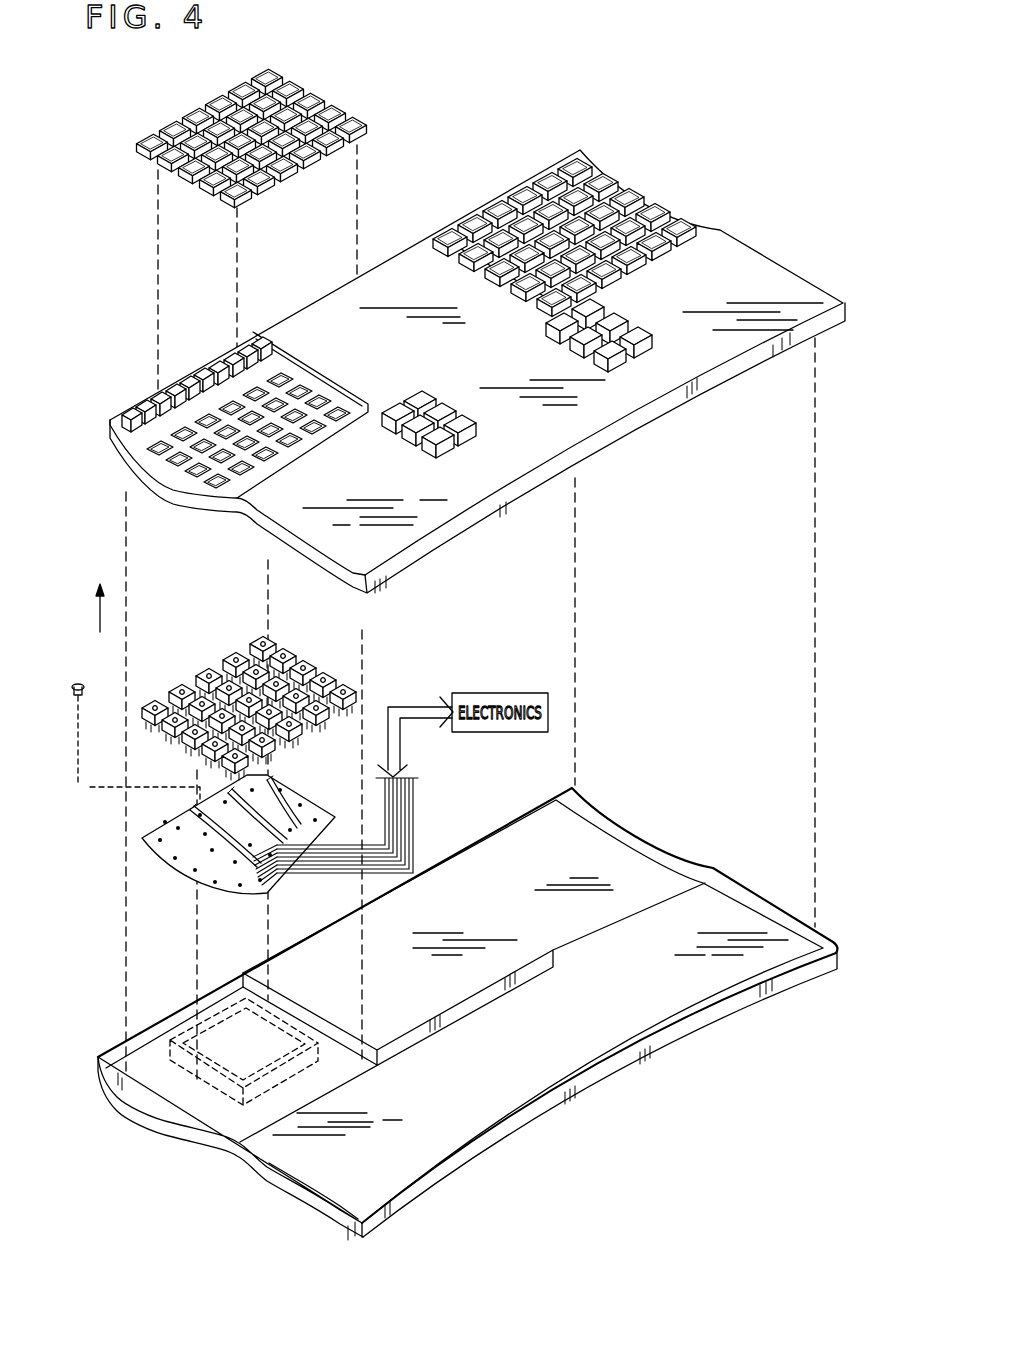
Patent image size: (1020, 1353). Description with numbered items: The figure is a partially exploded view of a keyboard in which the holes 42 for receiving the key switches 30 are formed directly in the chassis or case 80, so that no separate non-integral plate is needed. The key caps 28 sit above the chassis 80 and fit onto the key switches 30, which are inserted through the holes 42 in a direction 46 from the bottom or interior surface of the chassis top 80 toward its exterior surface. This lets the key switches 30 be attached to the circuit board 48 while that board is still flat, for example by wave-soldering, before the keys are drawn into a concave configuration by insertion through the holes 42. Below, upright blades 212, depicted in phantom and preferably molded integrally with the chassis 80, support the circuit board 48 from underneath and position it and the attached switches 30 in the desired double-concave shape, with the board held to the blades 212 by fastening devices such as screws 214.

The key caps 28 is at (314, 81).
The chassis 80 is at (735, 243).
The holes 42 is at (158, 433).
The direction 46 is at (103, 633).
The key switches 30 is at (152, 700).
The screws 214 is at (58, 722).
The circuit board 48 is at (288, 798).
The upright blades 212 is at (177, 1015).